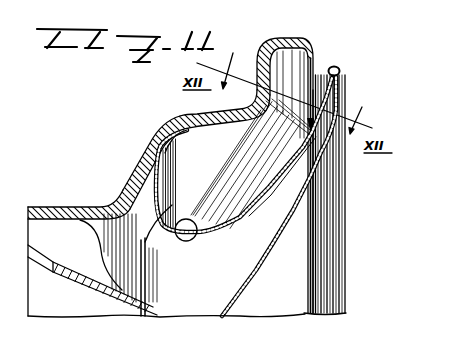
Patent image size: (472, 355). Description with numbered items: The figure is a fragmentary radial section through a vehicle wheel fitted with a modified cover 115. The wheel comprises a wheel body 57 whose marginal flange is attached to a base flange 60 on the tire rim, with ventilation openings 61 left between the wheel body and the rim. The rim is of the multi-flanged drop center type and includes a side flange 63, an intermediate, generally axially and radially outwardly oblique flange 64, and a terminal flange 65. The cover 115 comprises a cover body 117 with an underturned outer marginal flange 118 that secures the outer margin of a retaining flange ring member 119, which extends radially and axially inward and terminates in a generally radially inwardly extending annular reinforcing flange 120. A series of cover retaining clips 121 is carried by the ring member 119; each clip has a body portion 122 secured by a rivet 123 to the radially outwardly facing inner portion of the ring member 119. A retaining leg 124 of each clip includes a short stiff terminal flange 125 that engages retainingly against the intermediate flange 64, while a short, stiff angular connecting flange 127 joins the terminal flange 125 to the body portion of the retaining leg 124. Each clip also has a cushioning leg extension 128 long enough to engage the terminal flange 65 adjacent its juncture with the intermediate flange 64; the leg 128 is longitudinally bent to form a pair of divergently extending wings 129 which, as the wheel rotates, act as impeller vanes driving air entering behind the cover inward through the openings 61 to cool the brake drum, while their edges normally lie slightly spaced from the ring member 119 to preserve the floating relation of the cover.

The wheel body 57 is at (133, 307).
The base flange 60 is at (62, 207).
The ventilation openings 61 is at (74, 248).
The side flange 63 is at (140, 158).
The intermediate flange 64 is at (187, 113).
The terminal flange 65 is at (288, 38).
The cover 115 is at (349, 277).
The cover body 117 is at (343, 236).
The underturned outer marginal flange 118 is at (331, 73).
The retaining flange ring member 119 is at (236, 272).
The annular reinforcing flange 120 is at (147, 251).
The cover retaining clips 121 is at (135, 203).
The body portion 122 is at (172, 210).
The rivet 123 is at (186, 219).
The retaining leg 124 is at (168, 212).
The terminal flange 125 is at (188, 130).
The angular connecting flange 127 is at (173, 147).
The cushioning leg extension 128 is at (232, 217).
The wings 129 is at (333, 103).